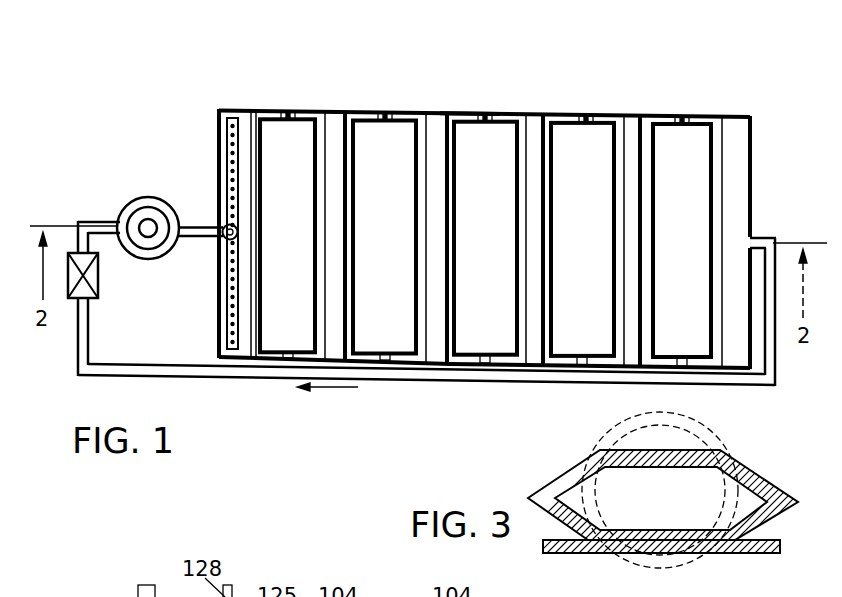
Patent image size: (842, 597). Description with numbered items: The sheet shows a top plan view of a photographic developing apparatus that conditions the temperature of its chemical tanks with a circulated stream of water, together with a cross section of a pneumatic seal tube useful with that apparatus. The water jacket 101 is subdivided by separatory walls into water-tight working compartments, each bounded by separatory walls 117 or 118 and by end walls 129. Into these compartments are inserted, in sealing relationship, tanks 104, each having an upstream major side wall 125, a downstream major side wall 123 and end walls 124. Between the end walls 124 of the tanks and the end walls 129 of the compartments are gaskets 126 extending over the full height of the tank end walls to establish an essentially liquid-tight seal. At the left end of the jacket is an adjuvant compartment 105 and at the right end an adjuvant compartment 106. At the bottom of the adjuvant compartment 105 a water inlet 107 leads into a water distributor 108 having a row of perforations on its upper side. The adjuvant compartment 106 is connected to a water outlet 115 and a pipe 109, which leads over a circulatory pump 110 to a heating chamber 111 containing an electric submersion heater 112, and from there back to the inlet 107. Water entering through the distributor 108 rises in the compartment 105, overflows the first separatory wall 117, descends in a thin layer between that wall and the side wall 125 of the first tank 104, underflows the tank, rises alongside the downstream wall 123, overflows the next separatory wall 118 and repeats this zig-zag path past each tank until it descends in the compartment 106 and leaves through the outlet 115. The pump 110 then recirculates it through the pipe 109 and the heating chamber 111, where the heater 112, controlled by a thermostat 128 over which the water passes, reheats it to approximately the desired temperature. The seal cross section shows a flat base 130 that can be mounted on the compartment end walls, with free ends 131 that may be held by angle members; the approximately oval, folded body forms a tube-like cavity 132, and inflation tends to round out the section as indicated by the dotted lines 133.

In FIG. 1, the water jacket 101 is at (738, 116).
In FIG. 1, the tank 104 is at (302, 131).
In FIG. 1, the adjuvant compartment 105 is at (238, 353).
In FIG. 1, the adjuvant compartment 106 is at (738, 142).
In FIG. 1, the water inlet 107 is at (219, 239).
In FIG. 1, the water distributor 108 is at (228, 135).
In FIG. 1, the pipe 109 is at (131, 375).
In FIG. 1, the circulatory pump 110 is at (92, 278).
In FIG. 1, the heating chamber 111 is at (137, 197).
In FIG. 1, the electric submersion heater 112 is at (155, 253).
In FIG. 1, the water outlet 115 is at (755, 237).
In FIG. 1, the separatory wall 117 is at (252, 116).
In FIG. 1, the separatory wall 118 is at (632, 130).
In FIG. 1, the major side wall 123 is at (320, 140).
In FIG. 1, the end wall 124 is at (507, 114).
In FIG. 1, the major side wall 125 is at (265, 140).
In FIG. 1, the gasket 126 is at (290, 112).
In FIG. 1, the thermostat 128 is at (225, 226).
In FIG. 1, the end wall 129 is at (467, 112).
In FIG. 3, the base 130 is at (738, 557).
In FIG. 3, the free ends 131 is at (545, 531).
In FIG. 3, the cavity 132 is at (623, 450).
In FIG. 3, the dotted lines 133 is at (718, 428).